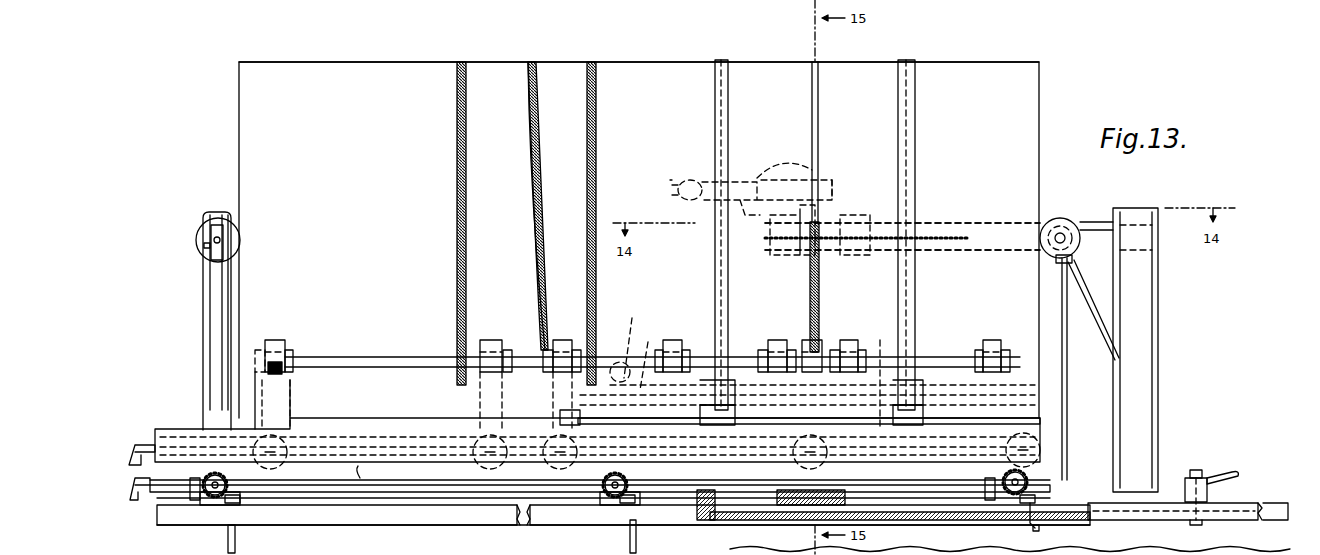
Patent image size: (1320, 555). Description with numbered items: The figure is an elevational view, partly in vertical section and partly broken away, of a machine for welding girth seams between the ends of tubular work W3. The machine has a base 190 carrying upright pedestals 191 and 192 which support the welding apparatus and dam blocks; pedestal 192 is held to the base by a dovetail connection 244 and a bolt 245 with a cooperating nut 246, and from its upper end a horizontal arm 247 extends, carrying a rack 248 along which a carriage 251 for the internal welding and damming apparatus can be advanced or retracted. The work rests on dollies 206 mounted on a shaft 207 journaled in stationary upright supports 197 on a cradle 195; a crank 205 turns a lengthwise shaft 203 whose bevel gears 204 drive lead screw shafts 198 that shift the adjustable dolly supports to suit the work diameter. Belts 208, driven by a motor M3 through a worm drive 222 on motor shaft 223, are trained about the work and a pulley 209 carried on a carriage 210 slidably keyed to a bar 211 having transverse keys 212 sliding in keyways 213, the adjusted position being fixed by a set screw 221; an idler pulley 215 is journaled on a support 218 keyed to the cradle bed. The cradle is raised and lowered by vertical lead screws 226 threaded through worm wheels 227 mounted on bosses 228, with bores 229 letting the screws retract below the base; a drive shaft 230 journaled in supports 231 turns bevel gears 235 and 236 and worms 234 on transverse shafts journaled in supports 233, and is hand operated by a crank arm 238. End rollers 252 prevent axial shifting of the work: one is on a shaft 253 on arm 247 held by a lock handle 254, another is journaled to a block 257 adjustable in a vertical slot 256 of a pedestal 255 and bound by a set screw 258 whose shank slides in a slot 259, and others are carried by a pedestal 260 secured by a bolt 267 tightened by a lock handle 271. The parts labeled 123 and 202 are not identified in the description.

The web or sheet material 123 is at (246, 118).
The work W3 is at (1052, 100).
The motor M3 is at (605, 330).
The belts 208 is at (905, 60).
The idler pulley 215 is at (933, 385).
The carriage 251 is at (830, 188).
The rack 248 is at (958, 223).
The arm 247 is at (970, 250).
The shaft 253 is at (1060, 220).
The rollers 252 is at (1100, 232).
The block 257 is at (208, 233).
The set screw 258 is at (202, 250).
The slot 259 is at (202, 293).
The pedestal 255 is at (202, 330).
The vertically extending slot 256 is at (215, 349).
The dollies 206 is at (990, 340).
The upright supports 197 is at (1010, 350).
The shaft 207 is at (390, 357).
The motor shaft 223 is at (632, 337).
The worm drive 222 is at (647, 355).
The pulley 209 is at (884, 376).
The pedestal 192 is at (1145, 550).
The lock handle 254 is at (1075, 280).
The pedestal 260 is at (1105, 290).
The lengthwise shaft 203 is at (910, 455).
The bevel gears 204 is at (1037, 430).
The leg 202 is at (1037, 440).
The lead screw shafts 198 is at (1042, 450).
The crank 205 is at (134, 445).
The carriage 210 is at (1047, 403).
The bar 211 is at (809, 434).
The set screw 221 is at (1097, 395).
The transverse keys 212 is at (657, 410).
The support 218 is at (836, 394).
The worm wheels 227 is at (1047, 482).
The bosses 228 is at (1055, 493).
The bores 229 is at (242, 515).
The base 190 is at (342, 523).
The pedestal 191 is at (775, 495).
The keyways 213 is at (540, 514).
The drive shaft 230 is at (927, 497).
The supports 231 is at (982, 493).
The bevel gear 235 is at (1000, 495).
The bevel gear 236 is at (1015, 505).
The worms 234 is at (418, 506).
The lead screws 226 is at (1047, 475).
The supports 233 is at (1050, 524).
The crank arm 238 is at (140, 510).
The cradle 195 is at (377, 471).
The dovetail connection 244 is at (1238, 503).
The bolt 245 is at (1205, 528).
The nut 246 is at (1185, 475).
The bolt 267 is at (1198, 470).
The lock handle 271 is at (1226, 470).